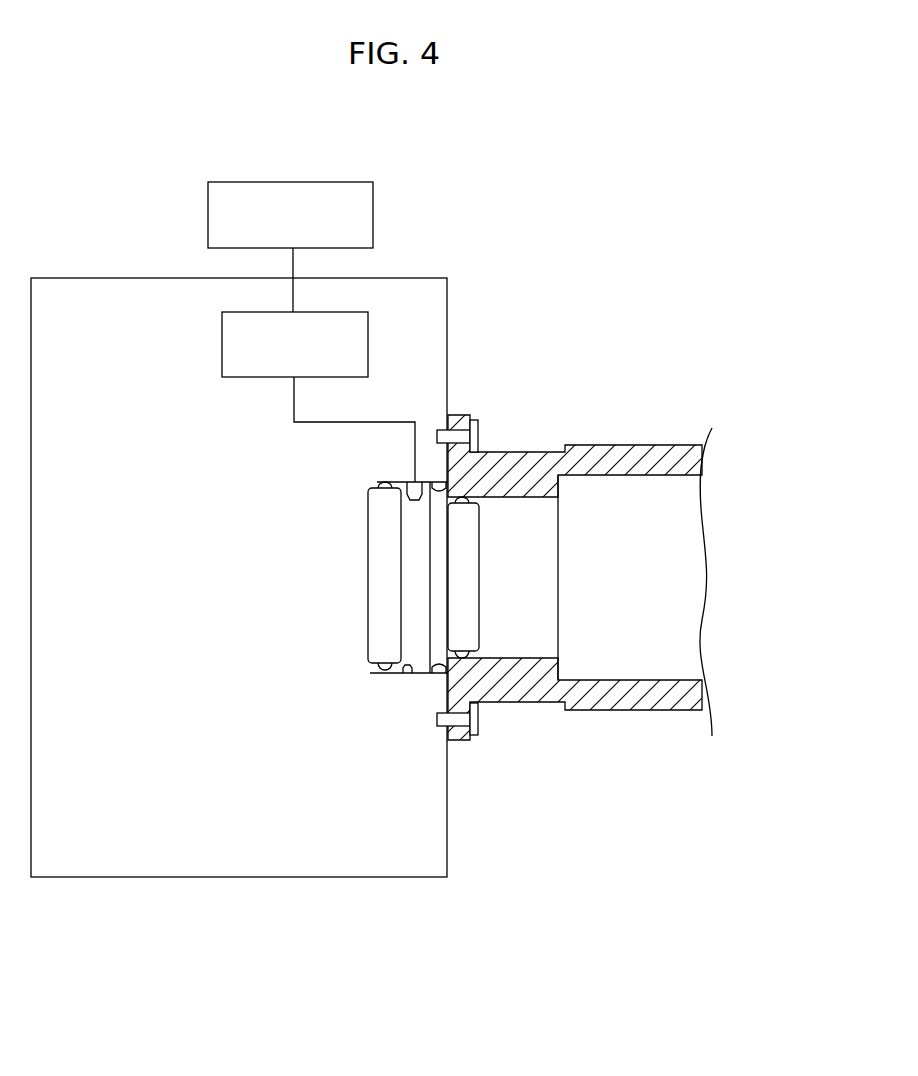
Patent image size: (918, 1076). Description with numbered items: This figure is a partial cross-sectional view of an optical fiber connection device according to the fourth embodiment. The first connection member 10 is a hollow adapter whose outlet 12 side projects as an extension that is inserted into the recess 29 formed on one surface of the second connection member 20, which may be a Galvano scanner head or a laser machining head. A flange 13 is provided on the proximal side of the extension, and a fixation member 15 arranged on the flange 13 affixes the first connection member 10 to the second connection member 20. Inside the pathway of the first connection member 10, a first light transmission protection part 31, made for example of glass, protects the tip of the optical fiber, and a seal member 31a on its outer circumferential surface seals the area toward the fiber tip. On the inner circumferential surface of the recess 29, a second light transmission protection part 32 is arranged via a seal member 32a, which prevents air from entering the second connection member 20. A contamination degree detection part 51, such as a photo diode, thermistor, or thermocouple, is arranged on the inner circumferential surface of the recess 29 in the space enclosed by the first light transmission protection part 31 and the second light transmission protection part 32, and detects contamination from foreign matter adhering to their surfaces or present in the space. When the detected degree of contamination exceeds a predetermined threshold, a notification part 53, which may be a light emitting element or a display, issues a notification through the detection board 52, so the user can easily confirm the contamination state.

The first connection member 10 is at (707, 374).
The outlet 12 is at (430, 620).
The flange 13 is at (462, 417).
The fixation member 15 is at (478, 432).
The second connection member 20 is at (128, 278).
The recess 29 is at (410, 672).
The first light transmission protection part 31 is at (472, 565).
The seal member 31a is at (472, 657).
The second light transmission protection part 32 is at (378, 603).
The seal member 32a is at (380, 672).
The contamination degree detection part 51 is at (418, 480).
The detection board 52 is at (368, 330).
The notification part 53 is at (373, 208).